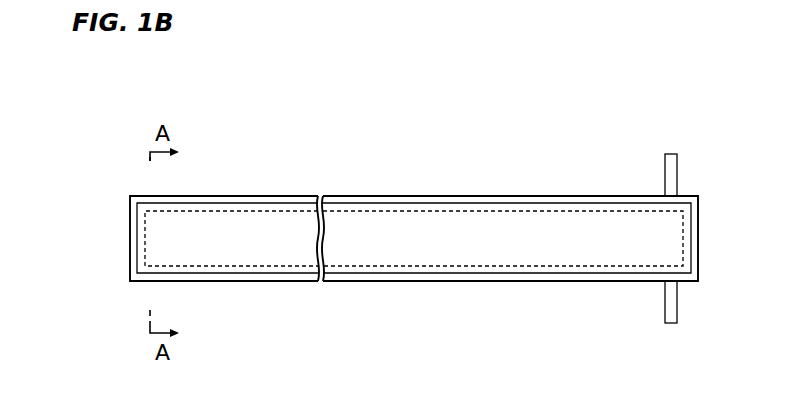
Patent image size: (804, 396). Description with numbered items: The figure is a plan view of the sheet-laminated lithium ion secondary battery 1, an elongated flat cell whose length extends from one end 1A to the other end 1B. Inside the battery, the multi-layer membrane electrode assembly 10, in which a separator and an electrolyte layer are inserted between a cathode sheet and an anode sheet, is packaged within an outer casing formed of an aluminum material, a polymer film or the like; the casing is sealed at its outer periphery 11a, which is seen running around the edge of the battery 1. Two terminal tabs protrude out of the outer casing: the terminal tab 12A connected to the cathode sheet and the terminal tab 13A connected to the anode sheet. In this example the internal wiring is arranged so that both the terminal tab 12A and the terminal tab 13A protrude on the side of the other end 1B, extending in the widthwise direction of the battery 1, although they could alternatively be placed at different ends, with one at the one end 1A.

The sheet-laminated lithium ion secondary battery 1 is at (411, 230).
The one end 1A is at (130, 212).
The other end 1B is at (698, 218).
The membrane electrode assembly 10 is at (464, 252).
The outer periphery 11a is at (134, 242).
The terminal tab 12A is at (671, 310).
The terminal tab 13A is at (669, 165).